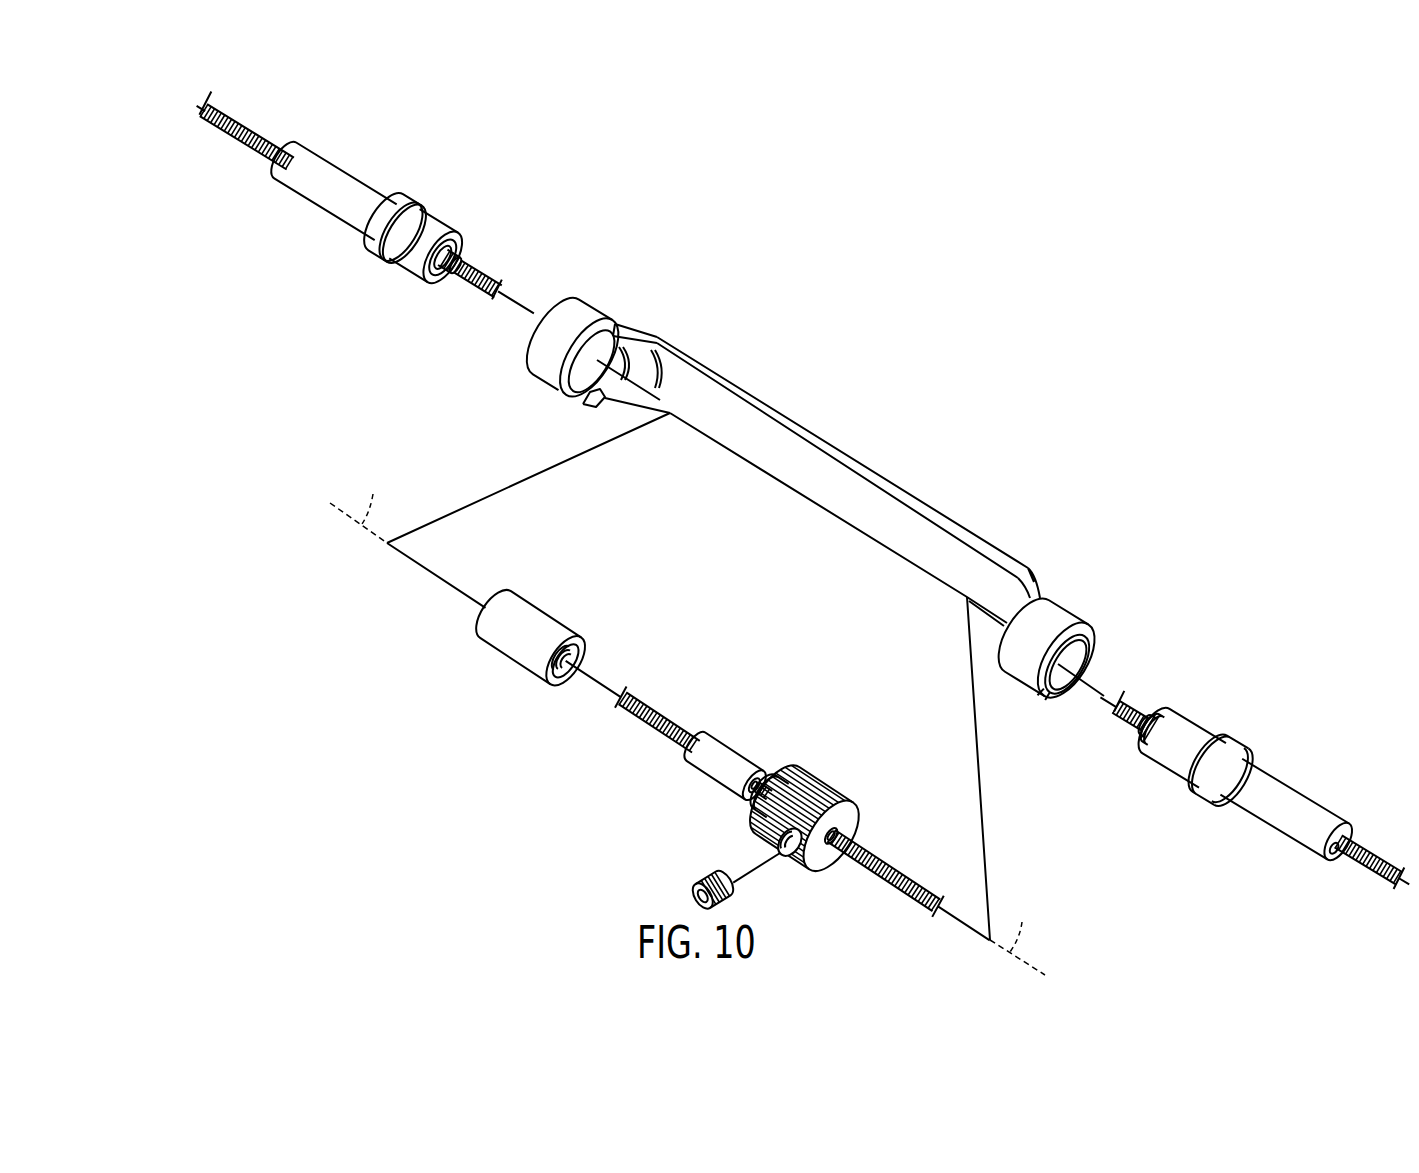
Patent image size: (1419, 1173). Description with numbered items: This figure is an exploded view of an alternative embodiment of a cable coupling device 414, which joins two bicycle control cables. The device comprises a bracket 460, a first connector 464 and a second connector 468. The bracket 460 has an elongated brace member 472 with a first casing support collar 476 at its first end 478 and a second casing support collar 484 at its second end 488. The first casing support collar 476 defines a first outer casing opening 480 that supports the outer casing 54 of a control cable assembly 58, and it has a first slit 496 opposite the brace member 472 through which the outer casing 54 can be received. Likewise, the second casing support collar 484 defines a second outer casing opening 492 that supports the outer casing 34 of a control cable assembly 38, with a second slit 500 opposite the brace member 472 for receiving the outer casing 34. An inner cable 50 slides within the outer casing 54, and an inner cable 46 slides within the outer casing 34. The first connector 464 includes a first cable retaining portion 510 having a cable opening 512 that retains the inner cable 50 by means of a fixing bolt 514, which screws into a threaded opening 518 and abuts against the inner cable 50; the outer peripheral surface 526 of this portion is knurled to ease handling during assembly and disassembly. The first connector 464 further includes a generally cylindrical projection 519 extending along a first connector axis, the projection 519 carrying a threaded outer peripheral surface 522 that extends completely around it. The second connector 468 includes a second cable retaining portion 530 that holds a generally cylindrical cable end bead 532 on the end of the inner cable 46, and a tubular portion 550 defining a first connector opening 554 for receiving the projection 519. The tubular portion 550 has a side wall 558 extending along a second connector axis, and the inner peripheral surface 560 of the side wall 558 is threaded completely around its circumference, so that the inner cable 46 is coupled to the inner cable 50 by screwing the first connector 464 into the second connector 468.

The outer casing 34 is at (335, 200).
The control cable assembly 38 is at (367, 166).
The inner cable 46 is at (242, 144).
The inner cable 50 is at (1373, 856).
The outer casing 54 is at (1283, 822).
The control cable assembly 58 is at (1306, 775).
The cable coupling device 414 is at (708, 226).
The bracket 460 is at (749, 372).
The first connector 464 is at (799, 891).
The second connector 468 is at (491, 673).
The brace member 472 is at (811, 430).
The first casing support collar 476 is at (1064, 616).
The first end 478 is at (1031, 570).
The first outer casing opening 480 is at (1082, 660).
The second casing support collar 484 is at (580, 306).
The second end 488 is at (639, 330).
The second outer casing opening 492 is at (615, 326).
The first slit 496 is at (1052, 702).
The second slit 500 is at (578, 401).
The first cable retaining portion 510 is at (838, 747).
The cable opening 512 is at (833, 842).
The fixing bolt 514 is at (710, 876).
The threaded opening 518 is at (784, 857).
The projection 519 is at (773, 763).
The threaded outer peripheral surface 522 is at (789, 779).
The outer peripheral surface 526 is at (846, 801).
The second cable retaining portion 530 is at (511, 581).
The cable end bead 532 is at (716, 742).
The tubular portion 550 is at (558, 596).
The first connector opening 554 is at (561, 677).
The side wall 558 is at (568, 626).
The inner peripheral surface 560 is at (572, 655).